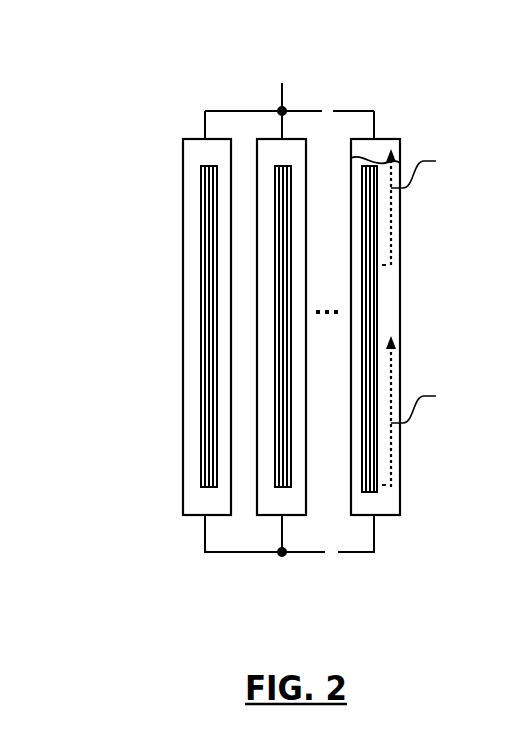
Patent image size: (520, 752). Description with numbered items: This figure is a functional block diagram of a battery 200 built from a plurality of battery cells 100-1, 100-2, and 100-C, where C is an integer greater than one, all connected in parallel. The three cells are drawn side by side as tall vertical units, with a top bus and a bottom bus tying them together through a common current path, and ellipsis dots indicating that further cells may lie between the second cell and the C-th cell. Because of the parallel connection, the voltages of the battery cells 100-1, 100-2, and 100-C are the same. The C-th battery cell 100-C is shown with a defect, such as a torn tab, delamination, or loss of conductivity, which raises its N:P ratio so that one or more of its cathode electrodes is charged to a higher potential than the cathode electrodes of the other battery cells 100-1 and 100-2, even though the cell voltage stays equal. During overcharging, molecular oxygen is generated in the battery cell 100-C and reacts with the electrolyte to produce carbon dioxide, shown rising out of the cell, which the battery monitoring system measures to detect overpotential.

The battery 200 is at (292, 290).
The first battery cell 100-1 is at (183, 248).
The second battery cell 100-2 is at (257, 299).
The C-th battery cell 100-C is at (400, 249).